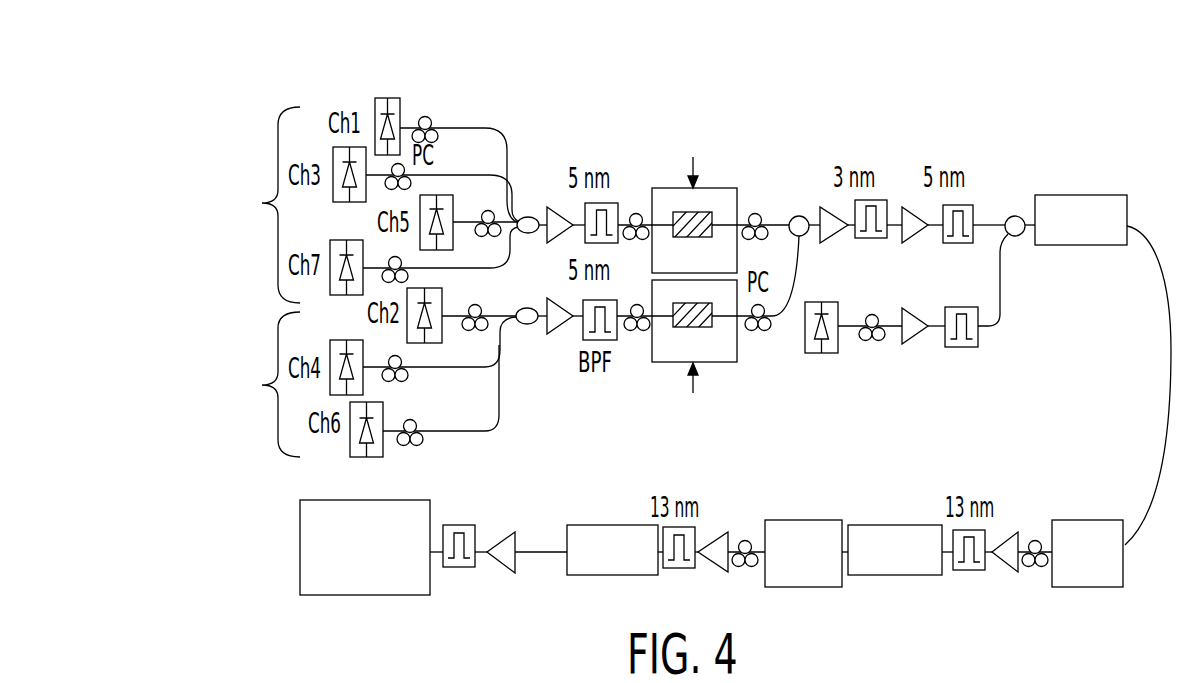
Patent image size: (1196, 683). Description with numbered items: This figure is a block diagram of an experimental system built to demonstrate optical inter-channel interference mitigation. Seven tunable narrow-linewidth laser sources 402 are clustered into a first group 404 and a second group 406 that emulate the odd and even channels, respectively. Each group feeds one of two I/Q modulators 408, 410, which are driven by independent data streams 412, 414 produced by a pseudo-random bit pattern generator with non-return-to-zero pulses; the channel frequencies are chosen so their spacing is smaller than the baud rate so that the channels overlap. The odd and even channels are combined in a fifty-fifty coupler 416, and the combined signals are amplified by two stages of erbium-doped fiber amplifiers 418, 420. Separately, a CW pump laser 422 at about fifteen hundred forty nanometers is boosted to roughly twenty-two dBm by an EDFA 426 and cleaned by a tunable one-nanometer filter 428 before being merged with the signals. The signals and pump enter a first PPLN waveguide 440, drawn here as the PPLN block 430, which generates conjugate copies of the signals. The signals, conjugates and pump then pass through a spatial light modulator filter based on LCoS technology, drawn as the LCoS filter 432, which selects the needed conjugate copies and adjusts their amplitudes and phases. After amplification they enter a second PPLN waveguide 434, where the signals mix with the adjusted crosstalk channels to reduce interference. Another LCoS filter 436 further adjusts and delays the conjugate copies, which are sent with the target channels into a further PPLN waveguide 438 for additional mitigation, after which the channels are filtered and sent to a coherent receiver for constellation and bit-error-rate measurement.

The tunable narrow-linewidth laser sources 402 is at (390, 66).
The first group of laser sources 404 is at (263, 205).
The second group of laser sources 406 is at (263, 384).
The I/Q modulator 408 is at (725, 188).
The I/Q modulator 410 is at (730, 362).
The data stream 412 is at (697, 120).
The data stream 414 is at (668, 412).
The 50/50 coupler 416 is at (797, 215).
The erbium-doped fiber amplifier 418 is at (831, 207).
The erbium-doped fiber amplifier 420 is at (915, 207).
The CW pump laser 422 is at (805, 320).
The EDFA 426 is at (918, 340).
The tunable 1 nm filter 428 is at (970, 347).
The PPLN waveguide 430 is at (1077, 195).
The LCoS filter 432 is at (1088, 520).
The second PPLN waveguide 434 is at (895, 525).
The LCoS filter 436 is at (800, 520).
The PPLN waveguide 438 is at (612, 525).
The first PPLN waveguide 440 is at (300, 548).